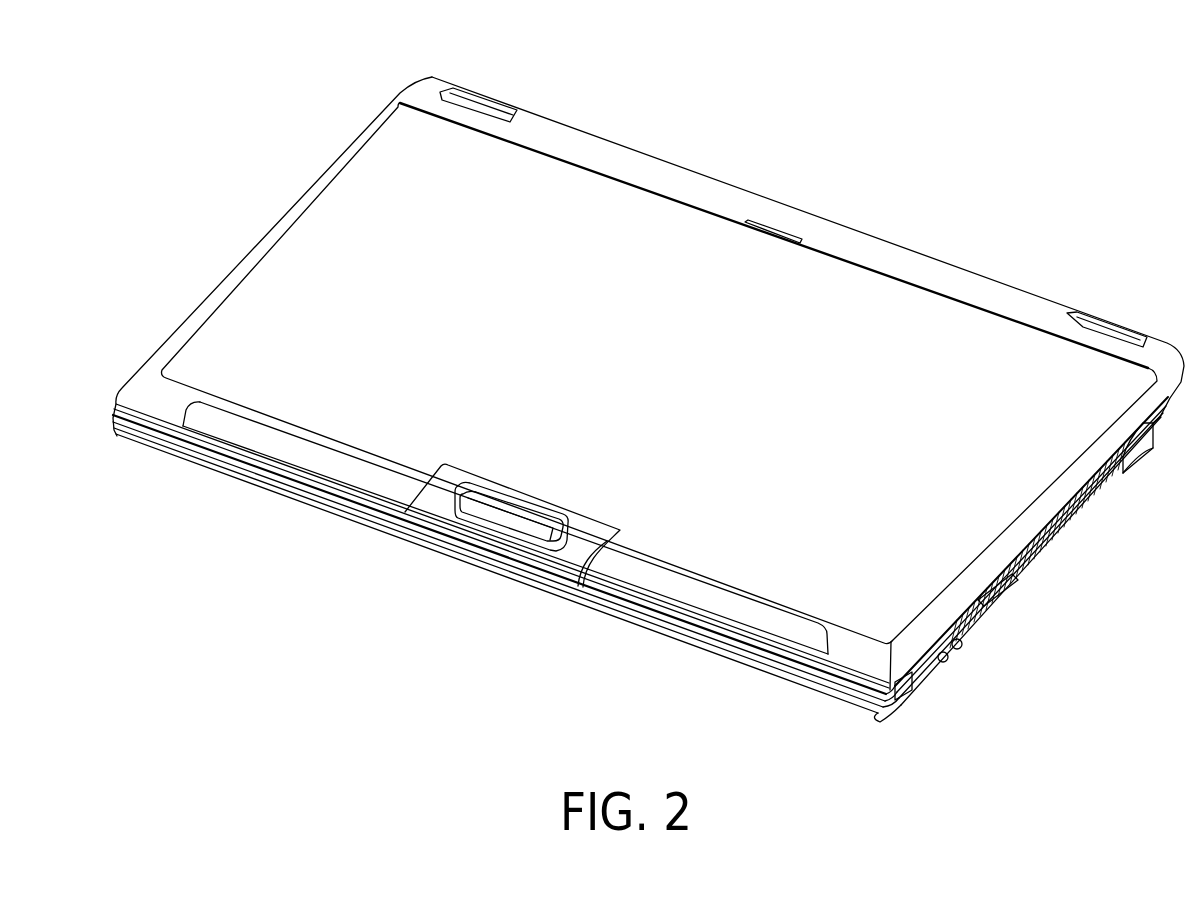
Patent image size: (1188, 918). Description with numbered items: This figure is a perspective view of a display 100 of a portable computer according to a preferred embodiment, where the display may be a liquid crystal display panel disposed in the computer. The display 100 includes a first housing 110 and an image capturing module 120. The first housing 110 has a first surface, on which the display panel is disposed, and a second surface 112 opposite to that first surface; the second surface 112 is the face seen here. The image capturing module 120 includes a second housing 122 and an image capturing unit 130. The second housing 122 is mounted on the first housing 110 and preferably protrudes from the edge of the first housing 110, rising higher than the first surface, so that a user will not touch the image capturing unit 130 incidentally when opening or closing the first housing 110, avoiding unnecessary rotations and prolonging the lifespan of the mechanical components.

The display 100 is at (649, 419).
The first housing 110 is at (648, 412).
The second surface 112 is at (660, 432).
The image capturing module 120 is at (512, 598).
The second housing 122 is at (512, 572).
The image capturing unit 130 is at (491, 580).